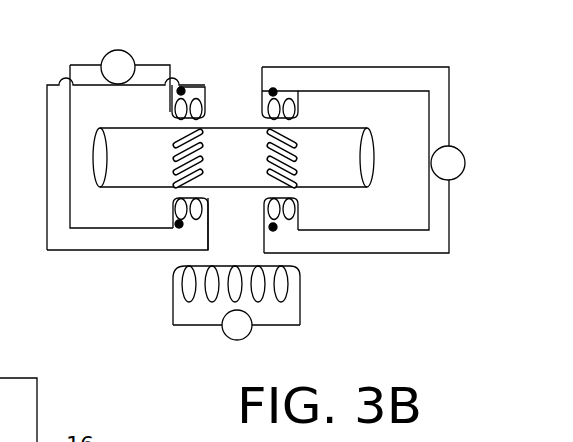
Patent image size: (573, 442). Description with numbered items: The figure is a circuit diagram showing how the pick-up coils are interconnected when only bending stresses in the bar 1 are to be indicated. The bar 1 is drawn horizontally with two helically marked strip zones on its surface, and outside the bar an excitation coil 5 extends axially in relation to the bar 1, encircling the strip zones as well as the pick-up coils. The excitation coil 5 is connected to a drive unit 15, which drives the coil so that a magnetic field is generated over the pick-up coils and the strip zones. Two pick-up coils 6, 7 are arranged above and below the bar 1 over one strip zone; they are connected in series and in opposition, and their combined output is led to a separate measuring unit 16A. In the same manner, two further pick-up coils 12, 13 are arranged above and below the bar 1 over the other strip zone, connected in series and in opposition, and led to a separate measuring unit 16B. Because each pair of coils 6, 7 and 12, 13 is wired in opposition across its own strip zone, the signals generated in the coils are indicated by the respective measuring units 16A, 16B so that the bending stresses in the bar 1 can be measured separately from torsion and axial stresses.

The bar 1 is at (348, 146).
The excitation coil 5 is at (296, 272).
The pick-up coil 6 is at (262, 114).
The pick-up coil 7 is at (298, 208).
The pick-up coil 12 is at (206, 116).
The pick-up coil 13 is at (174, 210).
The drive unit 15 is at (250, 335).
The measuring unit 16A is at (459, 151).
The measuring unit 16B is at (113, 50).